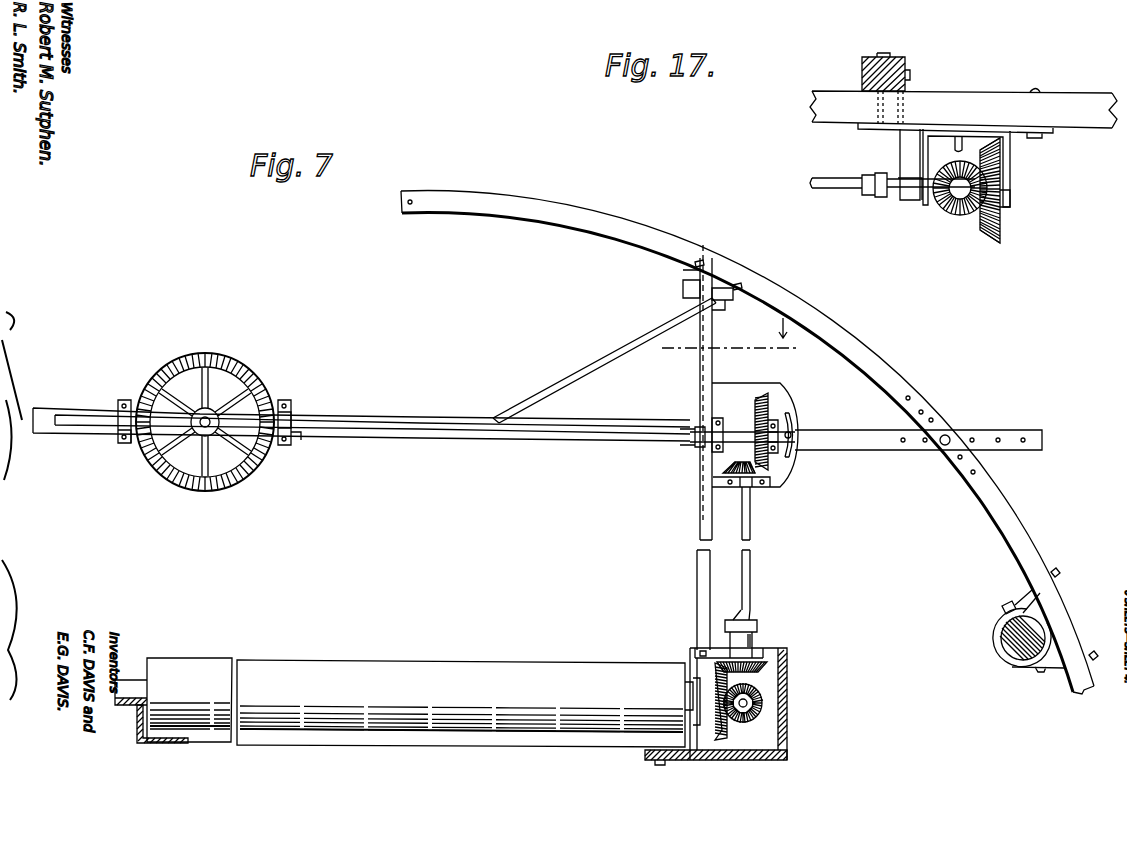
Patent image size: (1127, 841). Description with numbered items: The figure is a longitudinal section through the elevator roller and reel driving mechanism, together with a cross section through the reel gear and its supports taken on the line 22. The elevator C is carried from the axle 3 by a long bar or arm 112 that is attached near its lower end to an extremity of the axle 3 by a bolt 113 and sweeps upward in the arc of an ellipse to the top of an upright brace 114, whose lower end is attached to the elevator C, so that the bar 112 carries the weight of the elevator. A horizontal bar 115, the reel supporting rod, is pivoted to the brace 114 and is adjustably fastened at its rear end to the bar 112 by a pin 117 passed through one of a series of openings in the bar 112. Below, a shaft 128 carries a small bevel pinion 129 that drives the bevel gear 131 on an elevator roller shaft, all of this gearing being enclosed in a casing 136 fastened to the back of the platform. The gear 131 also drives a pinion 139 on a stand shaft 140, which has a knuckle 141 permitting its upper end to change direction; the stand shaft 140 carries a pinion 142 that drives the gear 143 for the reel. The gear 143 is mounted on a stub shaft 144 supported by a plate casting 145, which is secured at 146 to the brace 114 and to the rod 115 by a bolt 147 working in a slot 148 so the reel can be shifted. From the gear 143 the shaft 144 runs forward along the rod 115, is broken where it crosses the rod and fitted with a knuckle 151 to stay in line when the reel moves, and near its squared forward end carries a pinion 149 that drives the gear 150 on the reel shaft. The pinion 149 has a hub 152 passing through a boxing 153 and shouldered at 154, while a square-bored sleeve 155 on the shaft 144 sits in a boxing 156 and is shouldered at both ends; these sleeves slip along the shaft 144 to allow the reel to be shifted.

In FIG. 7, the axle 3 is at (1003, 665).
In FIG. 7, the section line 22 is at (732, 342).
In FIG. 7, the bar or arm 112 is at (580, 226).
In FIG. 7, the bolt 113 is at (1004, 600).
In FIG. 7, the upright brace 114 is at (698, 567).
In FIG. 17, the upright brace 114 is at (862, 66).
In FIG. 7, the horizontal bar 115 is at (426, 442).
In FIG. 17, the horizontal bar 115 is at (824, 108).
In FIG. 7, the pin 117 is at (950, 436).
In FIG. 7, the shaft 128 is at (766, 712).
In FIG. 7, the bevel pinion 129 is at (765, 698).
In FIG. 7, the bevel gear 131 is at (765, 750).
In FIG. 7, the casing 136 is at (790, 740).
In FIG. 7, the pinion 139 is at (775, 665).
In FIG. 7, the stand shaft 140 is at (751, 592).
In FIG. 7, the knuckle 141 is at (758, 624).
In FIG. 7, the pinion 142 is at (752, 490).
In FIG. 17, the pinion 142 is at (962, 215).
In FIG. 7, the gear 143 is at (770, 466).
In FIG. 17, the gear 143 is at (990, 240).
In FIG. 7, the stub shaft 144 is at (683, 443).
In FIG. 17, the stub shaft 144 is at (850, 188).
In FIG. 7, the plate casting 145 is at (735, 387).
In FIG. 17, the plate casting 145 is at (958, 150).
In FIG. 17, the fastening 146 is at (911, 76).
In FIG. 7, the bolt 147 is at (792, 430).
In FIG. 17, the bolt 147 is at (1038, 92).
In FIG. 7, the slot 148 is at (815, 447).
In FIG. 7, the pinion 149 is at (258, 470).
In FIG. 7, the gear 150 is at (232, 364).
In FIG. 7, the knuckle 151 is at (712, 418).
In FIG. 17, the knuckle 151 is at (883, 200).
In FIG. 7, the hub 152 is at (283, 400).
In FIG. 7, the boxing 153 is at (291, 410).
In FIG. 7, the shoulder 154 is at (293, 436).
In FIG. 7, the sleeve 155 is at (126, 400).
In FIG. 7, the boxing 156 is at (124, 444).
In FIG. 7, the elevator C is at (503, 670).